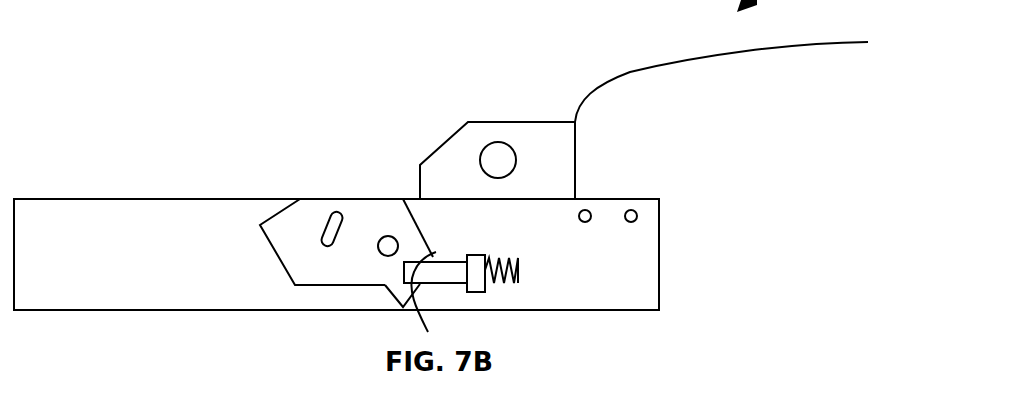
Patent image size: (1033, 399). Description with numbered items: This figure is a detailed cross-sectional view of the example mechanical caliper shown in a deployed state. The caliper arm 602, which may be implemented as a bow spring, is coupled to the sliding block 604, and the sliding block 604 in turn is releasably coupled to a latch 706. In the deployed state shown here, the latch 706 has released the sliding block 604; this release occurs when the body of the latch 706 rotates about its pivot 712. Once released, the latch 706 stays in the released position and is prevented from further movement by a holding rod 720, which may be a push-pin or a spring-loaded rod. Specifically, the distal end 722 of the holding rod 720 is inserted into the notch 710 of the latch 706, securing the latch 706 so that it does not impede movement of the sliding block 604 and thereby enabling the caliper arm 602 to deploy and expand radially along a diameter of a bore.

The caliper arm 602 is at (635, 72).
The sliding block 604 is at (507, 122).
The latch 706 is at (364, 212).
The notch 710 is at (420, 262).
The pivot 712 is at (398, 236).
The holding rod 720 is at (418, 271).
The distal end 722 is at (443, 300).